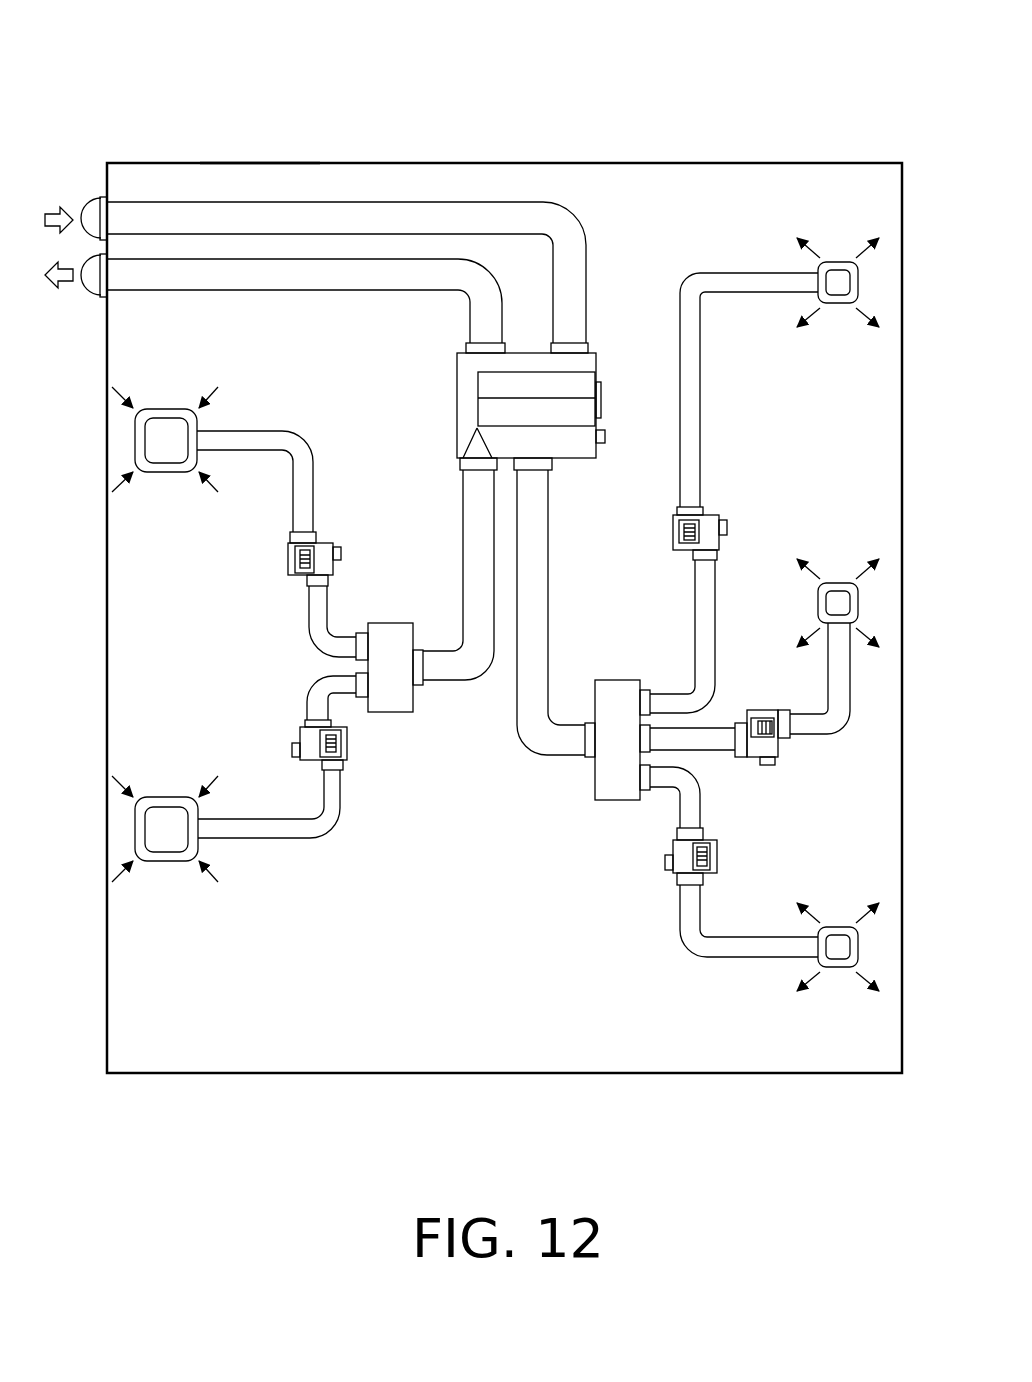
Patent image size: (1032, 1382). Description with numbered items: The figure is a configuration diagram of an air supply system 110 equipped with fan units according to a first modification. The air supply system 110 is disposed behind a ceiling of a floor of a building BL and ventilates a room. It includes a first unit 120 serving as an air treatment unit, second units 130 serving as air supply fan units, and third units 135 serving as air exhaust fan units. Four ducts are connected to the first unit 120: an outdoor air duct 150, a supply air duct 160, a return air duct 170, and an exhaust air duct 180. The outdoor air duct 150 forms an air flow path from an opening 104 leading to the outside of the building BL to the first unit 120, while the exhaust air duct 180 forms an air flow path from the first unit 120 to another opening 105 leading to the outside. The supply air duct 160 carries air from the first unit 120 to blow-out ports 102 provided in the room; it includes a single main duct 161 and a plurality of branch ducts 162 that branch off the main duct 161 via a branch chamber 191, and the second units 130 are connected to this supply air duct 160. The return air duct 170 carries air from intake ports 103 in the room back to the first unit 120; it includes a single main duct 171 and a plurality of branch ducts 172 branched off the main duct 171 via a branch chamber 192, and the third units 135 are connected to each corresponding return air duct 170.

The air supply system 110 is at (648, 200).
The building BL is at (258, 165).
The opening 104 is at (97, 198).
The opening 105 is at (97, 291).
The outdoor air duct 150 is at (385, 200).
The exhaust air duct 180 is at (277, 282).
The first unit 120 is at (465, 382).
The return air duct 170 is at (371, 616).
The main duct 171 is at (477, 540).
The branch ducts 172 is at (262, 438).
The branch chamber 192 is at (381, 628).
The third units 135 is at (290, 563).
The intake ports 103 is at (165, 418).
The supply air duct 160 is at (709, 603).
The main duct 161 is at (540, 578).
The branch ducts 162 is at (757, 273).
The branch chamber 191 is at (612, 690).
The second units 130 is at (710, 520).
The blow-out ports 102 is at (830, 297).